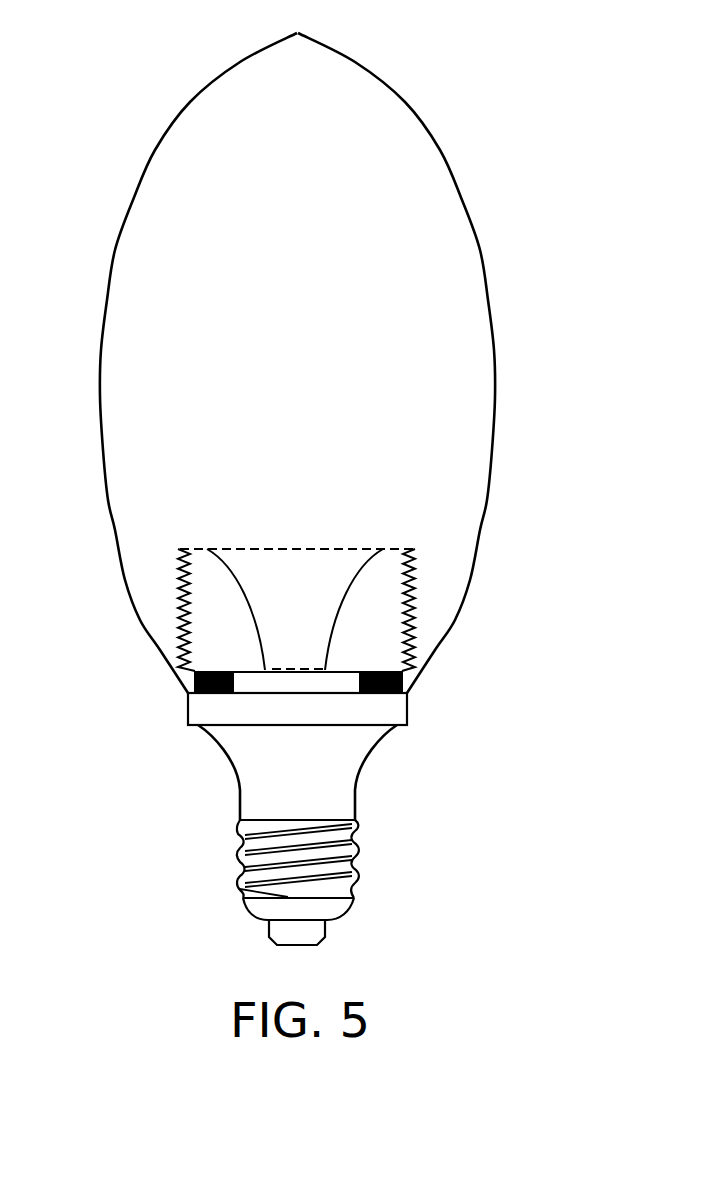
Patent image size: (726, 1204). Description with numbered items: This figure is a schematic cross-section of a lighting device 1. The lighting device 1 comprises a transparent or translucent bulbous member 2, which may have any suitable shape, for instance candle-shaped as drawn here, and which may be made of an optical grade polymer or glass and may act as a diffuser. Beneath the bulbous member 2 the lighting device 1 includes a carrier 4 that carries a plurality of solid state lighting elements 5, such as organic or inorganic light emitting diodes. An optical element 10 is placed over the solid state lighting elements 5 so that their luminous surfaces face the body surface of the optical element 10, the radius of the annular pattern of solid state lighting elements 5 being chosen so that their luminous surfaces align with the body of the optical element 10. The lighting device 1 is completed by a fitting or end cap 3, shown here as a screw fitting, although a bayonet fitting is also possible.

The lighting device 1 is at (103, 110).
The bulbous member 2 is at (462, 283).
The fitting or end cap 3 is at (357, 855).
The carrier 4 is at (203, 713).
The solid state lighting elements 5 is at (402, 683).
The optical element 10 is at (412, 610).